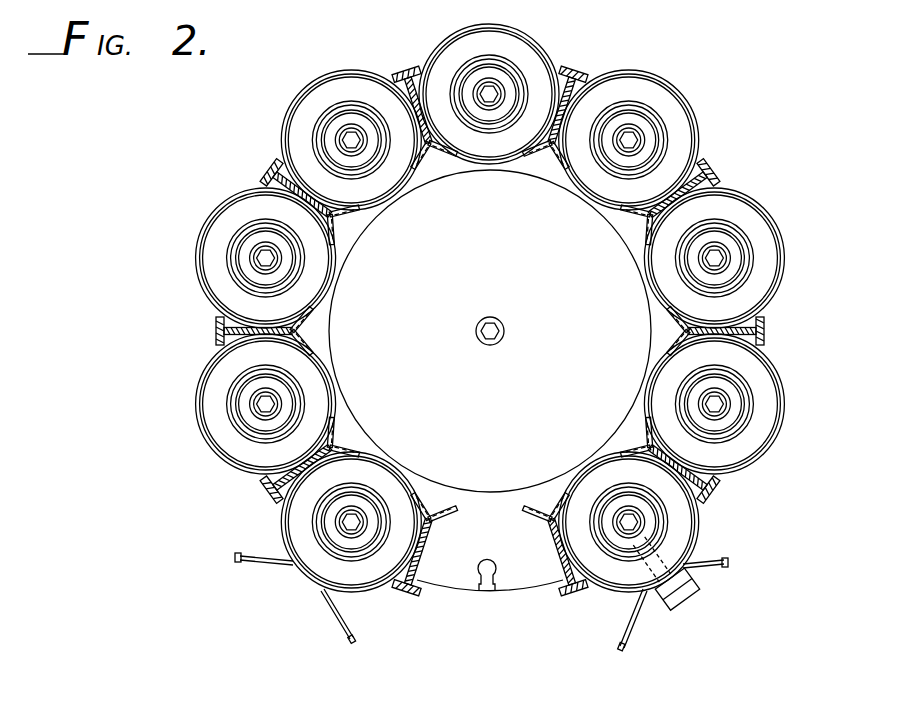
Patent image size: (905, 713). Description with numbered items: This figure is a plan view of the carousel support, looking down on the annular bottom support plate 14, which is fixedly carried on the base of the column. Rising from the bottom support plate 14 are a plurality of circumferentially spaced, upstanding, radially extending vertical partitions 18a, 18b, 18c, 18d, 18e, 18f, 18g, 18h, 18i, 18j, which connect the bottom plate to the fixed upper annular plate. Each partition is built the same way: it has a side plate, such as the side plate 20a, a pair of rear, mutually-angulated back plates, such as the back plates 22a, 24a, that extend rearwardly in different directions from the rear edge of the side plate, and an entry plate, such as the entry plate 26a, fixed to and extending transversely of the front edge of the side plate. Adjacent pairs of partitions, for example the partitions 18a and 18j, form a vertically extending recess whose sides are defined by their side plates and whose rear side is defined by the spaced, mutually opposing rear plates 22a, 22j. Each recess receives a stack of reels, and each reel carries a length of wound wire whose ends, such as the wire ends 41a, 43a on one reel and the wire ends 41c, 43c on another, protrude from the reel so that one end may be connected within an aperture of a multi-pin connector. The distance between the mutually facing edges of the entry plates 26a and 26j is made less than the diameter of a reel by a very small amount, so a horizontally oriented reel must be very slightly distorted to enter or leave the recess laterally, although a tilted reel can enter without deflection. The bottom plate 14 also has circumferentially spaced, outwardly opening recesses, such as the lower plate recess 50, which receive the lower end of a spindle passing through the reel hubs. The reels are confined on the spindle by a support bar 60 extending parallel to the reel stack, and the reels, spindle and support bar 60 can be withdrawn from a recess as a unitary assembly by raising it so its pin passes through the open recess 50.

The bottom support plate 14 is at (457, 588).
The vertical partition 18a is at (444, 540).
The vertical partition 18b is at (552, 552).
The vertical partition 18c is at (678, 492).
The vertical partition 18d is at (727, 328).
The vertical partition 18e is at (708, 199).
The vertical partition 18f is at (573, 100).
The vertical partition 18g is at (410, 99).
The vertical partition 18h is at (262, 198).
The vertical partition 18i is at (256, 340).
The vertical partition 18j is at (296, 472).
The side plate 20a is at (416, 572).
The rear back plate 22a is at (424, 491).
The rear back plate 24a is at (452, 506).
The entry plate 26a is at (407, 598).
The rear back plate 22j is at (360, 450).
The entry plate 26j is at (268, 495).
The wire end 41a is at (238, 566).
The wire end 43a is at (348, 644).
The wire end 41c is at (616, 642).
The wire end 43c is at (722, 567).
The lower plate recess 50 is at (500, 592).
The support bar 60 is at (694, 599).